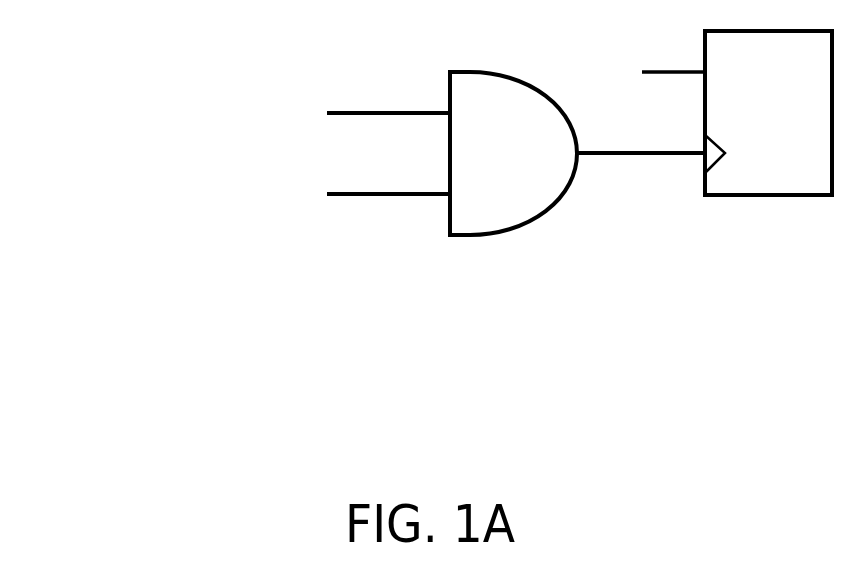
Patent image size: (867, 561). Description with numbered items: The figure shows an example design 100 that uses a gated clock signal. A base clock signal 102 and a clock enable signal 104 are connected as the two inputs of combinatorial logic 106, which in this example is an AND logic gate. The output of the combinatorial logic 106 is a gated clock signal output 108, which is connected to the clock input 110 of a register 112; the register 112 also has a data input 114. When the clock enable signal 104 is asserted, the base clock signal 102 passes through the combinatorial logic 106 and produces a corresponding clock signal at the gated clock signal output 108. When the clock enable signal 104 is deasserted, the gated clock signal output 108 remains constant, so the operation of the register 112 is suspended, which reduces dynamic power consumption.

The example design 100 is at (430, 176).
The base clock signal 102 is at (239, 226).
The clock enable signal 104 is at (333, 122).
The combinatorial logic 106 is at (513, 153).
The gated clock signal output 108 is at (587, 153).
The clock input 110 is at (705, 158).
The register 112 is at (768, 113).
The data input 114 is at (697, 68).